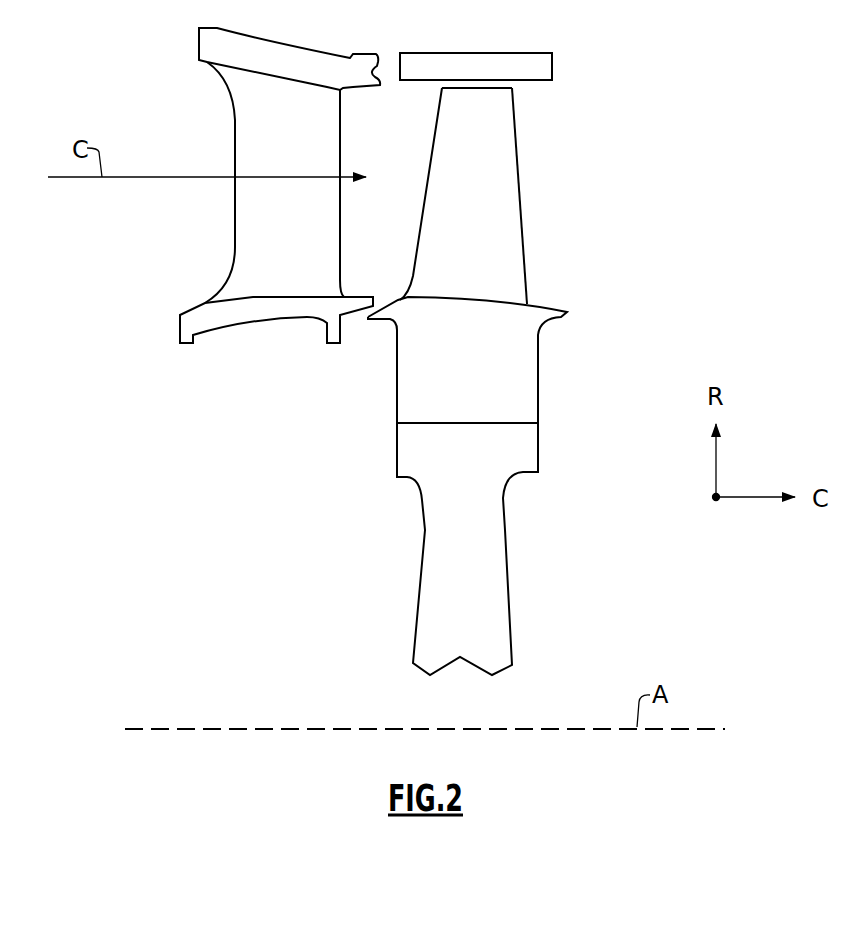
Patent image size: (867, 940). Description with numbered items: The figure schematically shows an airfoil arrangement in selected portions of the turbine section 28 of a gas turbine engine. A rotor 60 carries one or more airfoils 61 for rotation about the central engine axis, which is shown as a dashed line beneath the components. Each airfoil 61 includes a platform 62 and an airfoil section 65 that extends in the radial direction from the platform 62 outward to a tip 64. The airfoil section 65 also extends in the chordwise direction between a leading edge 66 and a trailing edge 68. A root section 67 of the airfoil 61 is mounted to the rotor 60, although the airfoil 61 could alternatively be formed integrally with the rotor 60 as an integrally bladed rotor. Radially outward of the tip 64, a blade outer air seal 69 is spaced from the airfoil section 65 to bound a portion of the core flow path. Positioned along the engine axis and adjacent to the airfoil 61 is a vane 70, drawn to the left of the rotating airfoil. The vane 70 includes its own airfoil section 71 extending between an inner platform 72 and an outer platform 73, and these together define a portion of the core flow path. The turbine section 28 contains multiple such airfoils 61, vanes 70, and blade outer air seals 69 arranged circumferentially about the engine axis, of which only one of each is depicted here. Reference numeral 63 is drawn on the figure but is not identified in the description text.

The turbine section 28 is at (602, 90).
The rotor 60 is at (490, 528).
The airfoil 61 is at (560, 185).
The platform 62 is at (396, 300).
The platform 63 is at (460, 297).
The tip 64 is at (458, 88).
The airfoil section 65 is at (474, 164).
The leading edge 66 is at (428, 157).
The root section 67 is at (540, 382).
The trailing edge 68 is at (518, 142).
The blade outer air seal 69 is at (523, 53).
The vane 70 is at (190, 117).
The airfoil section 71 is at (250, 230).
The inner platform 72 is at (178, 328).
The outer platform 73 is at (197, 43).